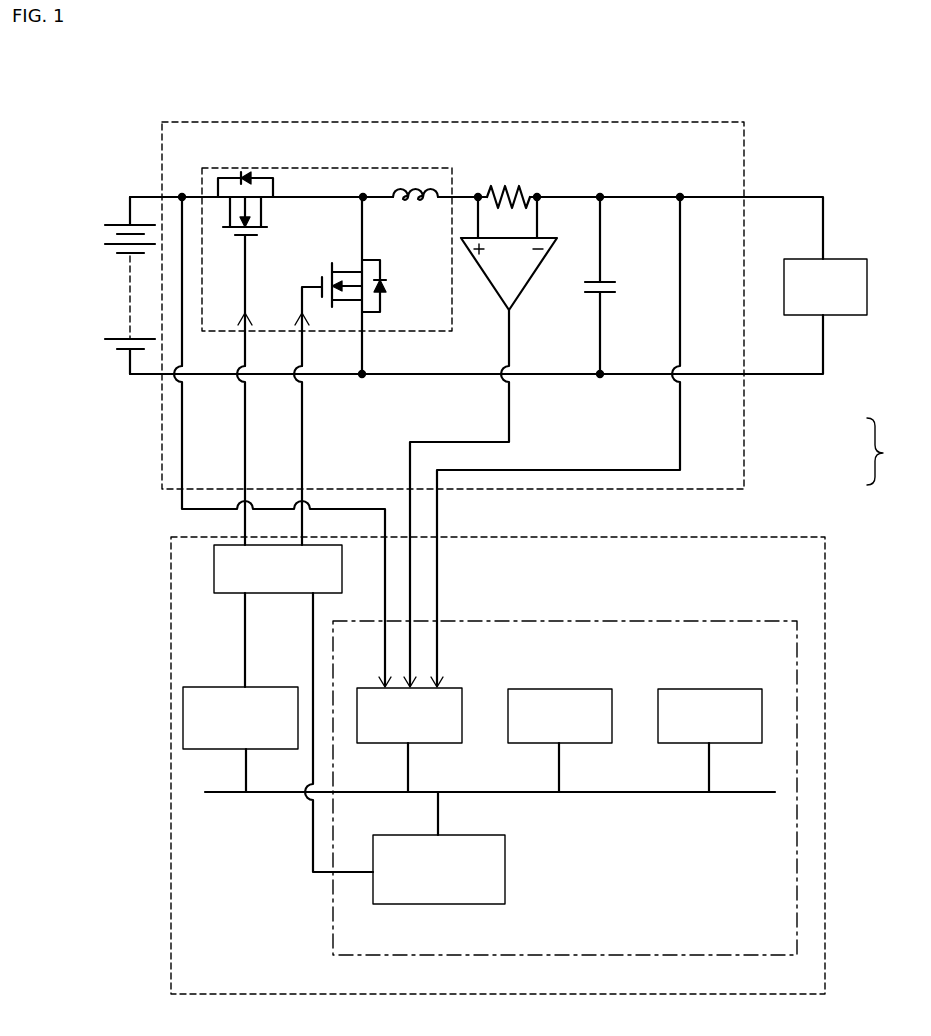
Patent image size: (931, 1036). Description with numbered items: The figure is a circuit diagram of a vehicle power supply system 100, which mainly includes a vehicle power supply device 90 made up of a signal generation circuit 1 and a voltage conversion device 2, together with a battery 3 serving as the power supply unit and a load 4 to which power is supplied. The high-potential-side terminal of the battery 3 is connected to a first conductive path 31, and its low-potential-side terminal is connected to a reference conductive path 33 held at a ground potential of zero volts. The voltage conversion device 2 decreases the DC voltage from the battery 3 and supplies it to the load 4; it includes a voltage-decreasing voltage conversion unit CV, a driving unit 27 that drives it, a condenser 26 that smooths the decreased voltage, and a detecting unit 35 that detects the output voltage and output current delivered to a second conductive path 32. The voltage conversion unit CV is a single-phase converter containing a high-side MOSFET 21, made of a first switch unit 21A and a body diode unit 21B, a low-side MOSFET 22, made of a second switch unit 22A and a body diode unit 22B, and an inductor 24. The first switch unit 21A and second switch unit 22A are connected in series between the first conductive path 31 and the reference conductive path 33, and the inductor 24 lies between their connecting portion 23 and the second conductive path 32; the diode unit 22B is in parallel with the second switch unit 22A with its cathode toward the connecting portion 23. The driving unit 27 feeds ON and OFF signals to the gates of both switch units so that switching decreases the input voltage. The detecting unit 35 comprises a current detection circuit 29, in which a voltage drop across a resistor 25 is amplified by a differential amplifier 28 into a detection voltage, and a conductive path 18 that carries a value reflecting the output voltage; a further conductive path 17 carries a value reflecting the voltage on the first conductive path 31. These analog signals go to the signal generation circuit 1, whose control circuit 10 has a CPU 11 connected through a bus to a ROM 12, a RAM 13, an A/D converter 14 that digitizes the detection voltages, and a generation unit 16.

The vehicle power supply system 100 is at (745, 78).
The vehicle power supply device 90 is at (889, 451).
The signal generation circuit 1 is at (780, 537).
The voltage conversion device 2 is at (744, 455).
The battery 3 is at (130, 282).
The load 4 is at (853, 259).
The control circuit 10 is at (683, 620).
The CPU 11 is at (473, 833).
The ROM 12 is at (548, 687).
The RAM 13 is at (682, 687).
The A/D converter 14 is at (453, 686).
The generation unit 16 is at (260, 687).
The conductive path 17 is at (182, 440).
The conductive path 18 is at (543, 329).
The MOSFET 21 is at (266, 221).
The first switch unit 21A is at (236, 237).
The diode unit 21B is at (248, 178).
The MOSFET 22 is at (363, 285).
The second switch unit 22A is at (348, 305).
The diode unit 22B is at (382, 310).
The connecting portion 23 is at (363, 197).
The inductor 24 is at (408, 188).
The resistor 25 is at (507, 193).
The condenser 26 is at (605, 282).
The driving unit 27 is at (214, 563).
The differential amplifier 28 is at (497, 297).
The current detection circuit 29 is at (538, 278).
The first conductive path 31 is at (182, 197).
The second conductive path 32 is at (583, 197).
The reference conductive path 33 is at (448, 376).
The detecting unit 35 is at (542, 442).
The voltage conversion unit CV is at (355, 167).